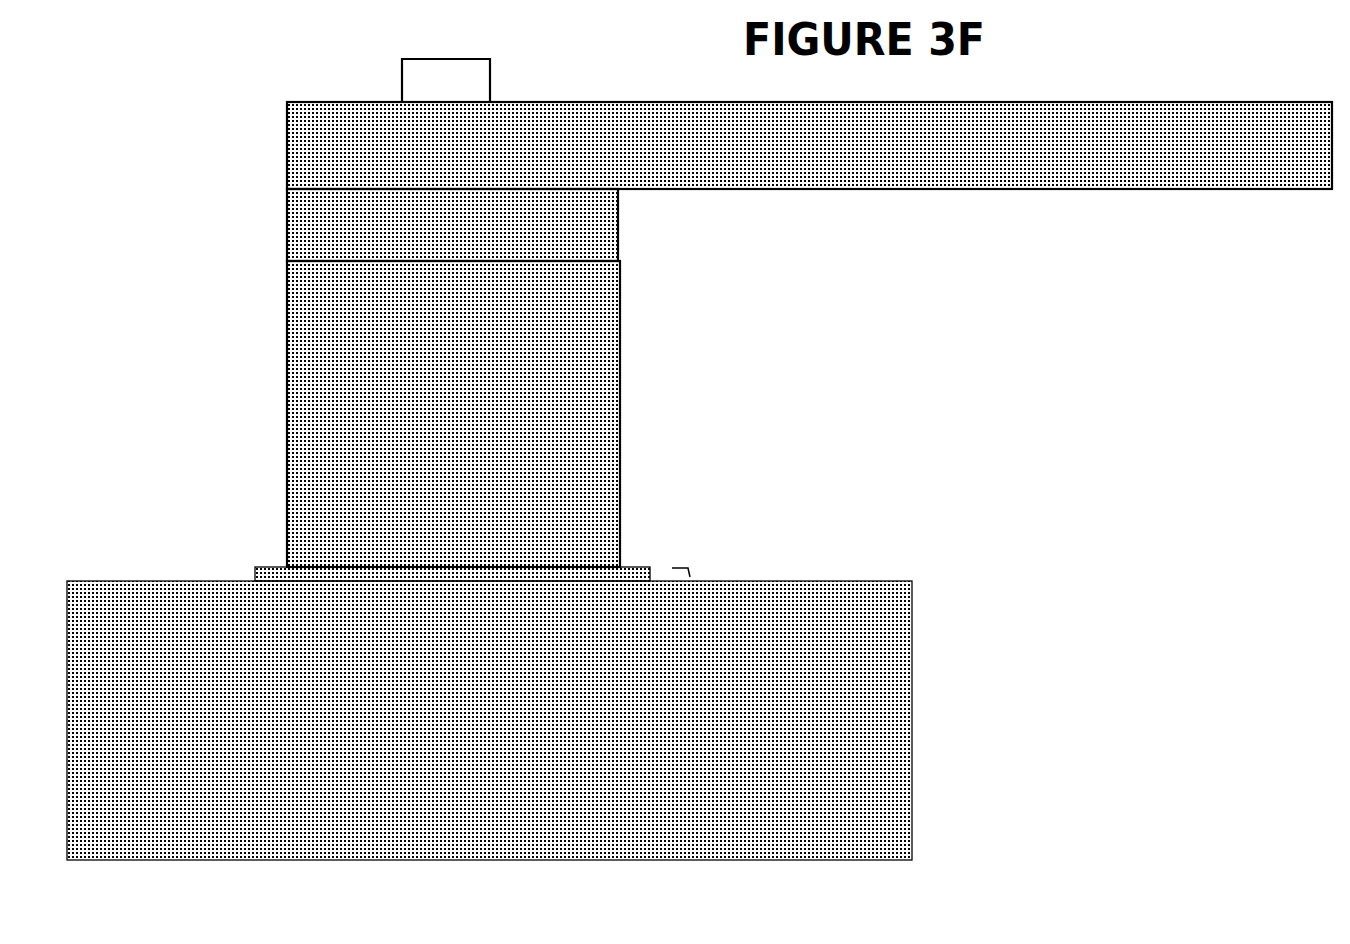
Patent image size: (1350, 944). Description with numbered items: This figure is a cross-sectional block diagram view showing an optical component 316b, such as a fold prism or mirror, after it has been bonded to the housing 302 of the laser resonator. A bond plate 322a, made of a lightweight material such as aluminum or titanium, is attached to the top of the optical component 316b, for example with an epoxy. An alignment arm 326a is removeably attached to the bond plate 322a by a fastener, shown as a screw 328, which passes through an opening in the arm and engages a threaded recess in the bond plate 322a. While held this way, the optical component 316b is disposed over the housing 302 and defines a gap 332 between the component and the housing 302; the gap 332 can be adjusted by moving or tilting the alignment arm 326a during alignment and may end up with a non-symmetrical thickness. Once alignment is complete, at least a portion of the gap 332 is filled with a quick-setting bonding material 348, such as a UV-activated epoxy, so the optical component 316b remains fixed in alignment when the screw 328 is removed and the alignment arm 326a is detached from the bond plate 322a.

The housing 302 is at (489, 720).
The bonding material 348 is at (632, 566).
The gap 332 is at (692, 575).
The optical component 316b is at (453, 414).
The bond plate 322a is at (452, 225).
The alignment arm 326a is at (809, 145).
The screw 328 is at (425, 59).